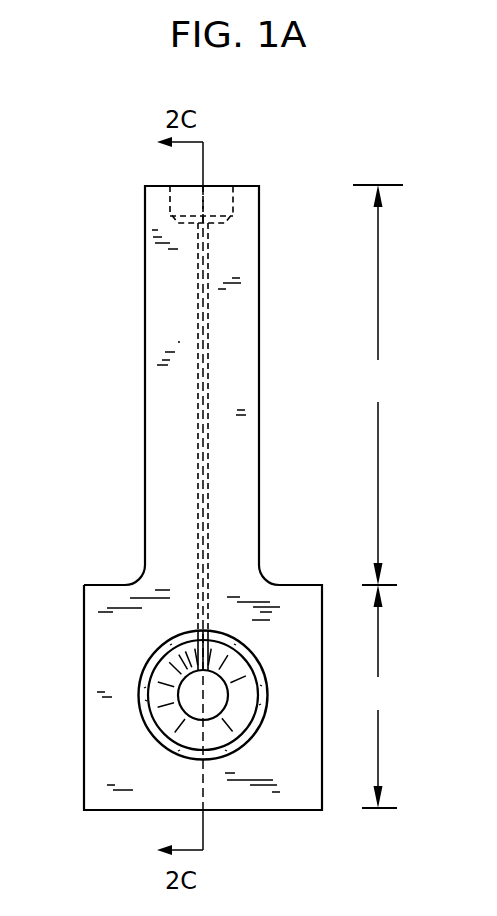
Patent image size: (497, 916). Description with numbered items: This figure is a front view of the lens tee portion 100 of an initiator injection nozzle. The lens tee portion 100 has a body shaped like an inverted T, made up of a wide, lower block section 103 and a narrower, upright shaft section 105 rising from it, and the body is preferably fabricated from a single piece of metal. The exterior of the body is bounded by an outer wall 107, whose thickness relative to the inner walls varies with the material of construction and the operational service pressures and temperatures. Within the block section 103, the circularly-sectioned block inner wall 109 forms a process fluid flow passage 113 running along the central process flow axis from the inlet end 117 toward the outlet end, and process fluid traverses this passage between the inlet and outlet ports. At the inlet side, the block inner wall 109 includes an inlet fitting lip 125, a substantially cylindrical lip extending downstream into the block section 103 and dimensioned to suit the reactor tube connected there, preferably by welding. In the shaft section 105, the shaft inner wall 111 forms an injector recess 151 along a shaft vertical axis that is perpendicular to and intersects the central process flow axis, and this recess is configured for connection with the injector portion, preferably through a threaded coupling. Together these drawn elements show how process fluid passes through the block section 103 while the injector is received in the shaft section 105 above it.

The lens tee portion 100 is at (400, 167).
The block section 103 is at (379, 696).
The shaft section 105 is at (378, 385).
The outer wall 107 is at (145, 320).
The block inner wall 109 is at (163, 650).
The shaft inner wall 111 is at (198, 462).
The process fluid flow passage 113 is at (193, 705).
The inlet end 117 is at (103, 723).
The inlet fitting lip 125 is at (177, 722).
The injector recess 151 is at (222, 192).